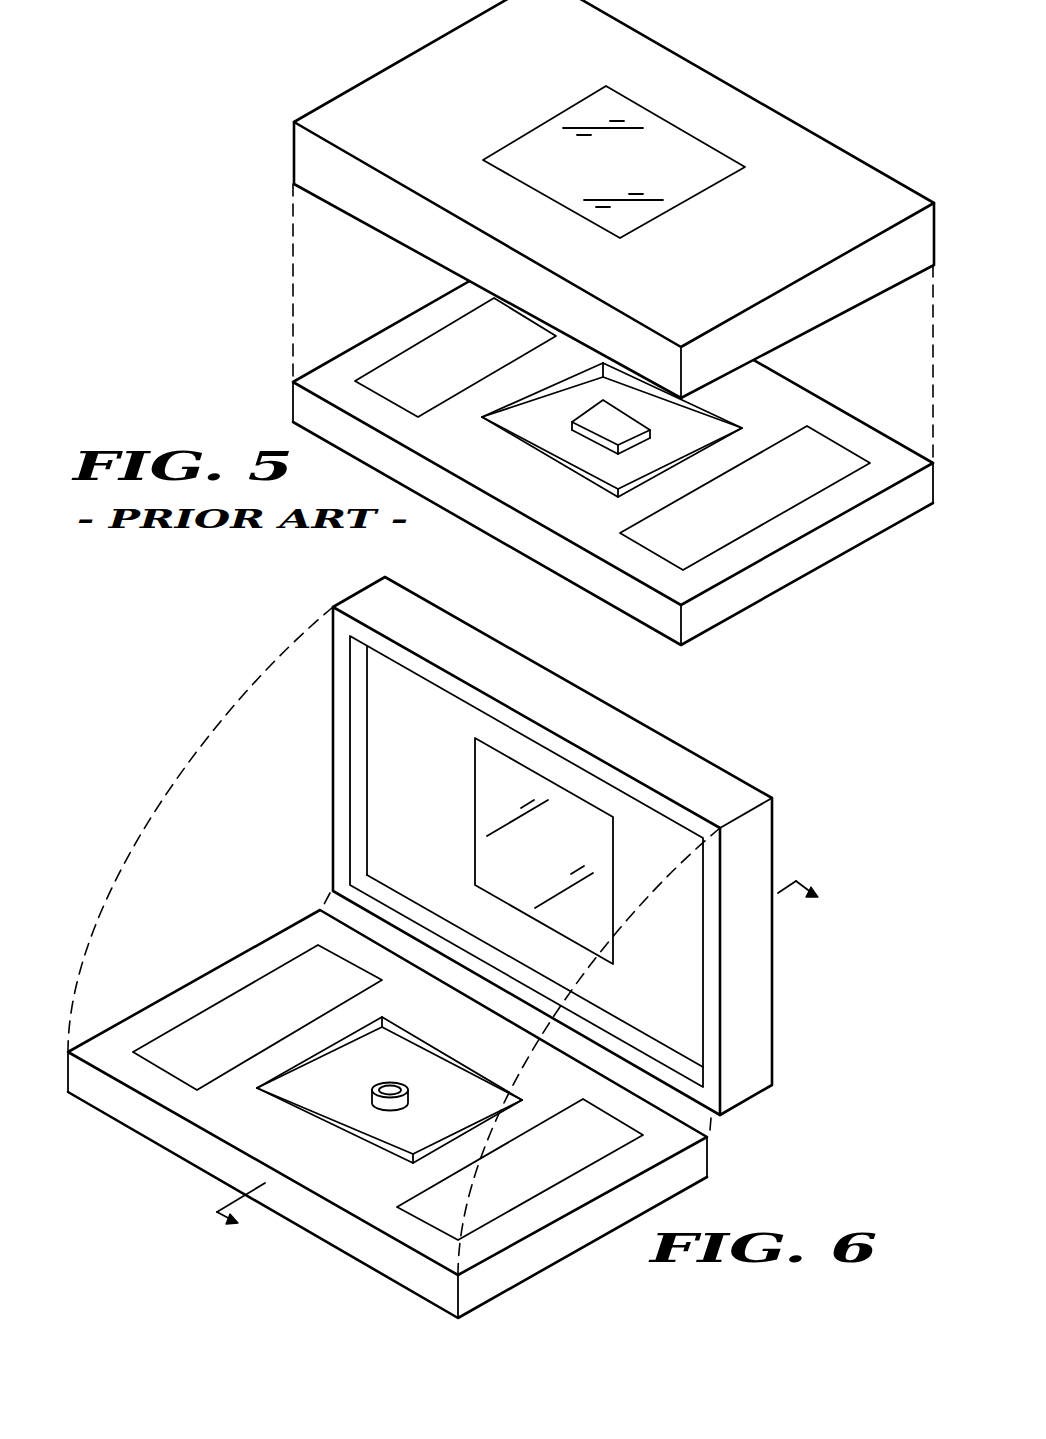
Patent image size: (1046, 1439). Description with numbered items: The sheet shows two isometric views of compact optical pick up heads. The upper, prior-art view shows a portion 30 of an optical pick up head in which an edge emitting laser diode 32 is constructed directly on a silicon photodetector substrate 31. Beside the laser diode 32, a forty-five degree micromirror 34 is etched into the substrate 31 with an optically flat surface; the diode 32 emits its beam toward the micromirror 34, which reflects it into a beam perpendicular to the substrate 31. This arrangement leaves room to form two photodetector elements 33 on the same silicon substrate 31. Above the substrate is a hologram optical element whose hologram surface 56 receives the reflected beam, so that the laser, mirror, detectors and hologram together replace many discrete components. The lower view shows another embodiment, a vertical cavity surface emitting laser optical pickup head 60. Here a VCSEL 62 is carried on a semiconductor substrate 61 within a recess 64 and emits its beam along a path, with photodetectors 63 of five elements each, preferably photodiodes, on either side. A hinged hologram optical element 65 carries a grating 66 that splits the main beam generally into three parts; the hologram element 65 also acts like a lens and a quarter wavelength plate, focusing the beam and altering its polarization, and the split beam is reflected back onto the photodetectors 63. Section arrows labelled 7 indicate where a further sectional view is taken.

In FIG. 5, the portion of an optical pick up head 30 is at (215, 428).
In FIG. 5, the silicon photodetector substrate 31 is at (382, 330).
In FIG. 5, the edge emitting laser diode 32 is at (597, 441).
In FIG. 5, the photodetector elements 33 is at (470, 375).
In FIG. 5, the 45 degree micromirror 34 is at (718, 415).
In FIG. 5, the hologram surface 56 is at (546, 121).
In FIG. 6, the vertical cavity surface emitting laser optical pickup head 60 is at (797, 1208).
In FIG. 6, the semiconductor substrate 61 is at (197, 978).
In FIG. 6, the VCSEL 62 is at (370, 1089).
In FIG. 6, the photodetectors 63 is at (270, 1032).
In FIG. 6, the recess 64 is at (433, 1065).
In FIG. 6, the hologram optical element 65 is at (333, 744).
In FIG. 6, the grating 66 is at (475, 806).
In FIG. 6, the section line 7- 7 is at (529, 1067).